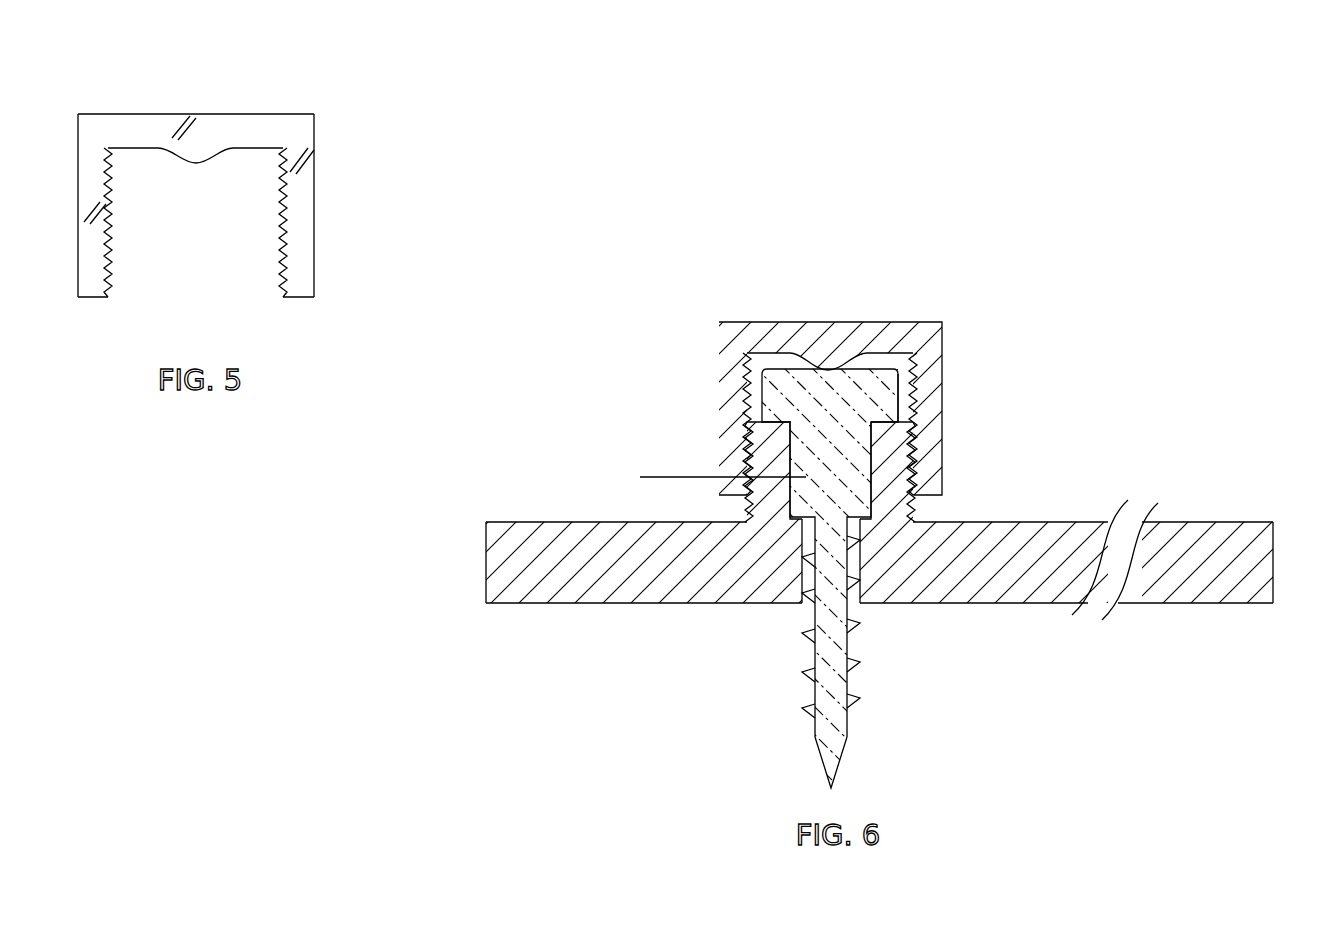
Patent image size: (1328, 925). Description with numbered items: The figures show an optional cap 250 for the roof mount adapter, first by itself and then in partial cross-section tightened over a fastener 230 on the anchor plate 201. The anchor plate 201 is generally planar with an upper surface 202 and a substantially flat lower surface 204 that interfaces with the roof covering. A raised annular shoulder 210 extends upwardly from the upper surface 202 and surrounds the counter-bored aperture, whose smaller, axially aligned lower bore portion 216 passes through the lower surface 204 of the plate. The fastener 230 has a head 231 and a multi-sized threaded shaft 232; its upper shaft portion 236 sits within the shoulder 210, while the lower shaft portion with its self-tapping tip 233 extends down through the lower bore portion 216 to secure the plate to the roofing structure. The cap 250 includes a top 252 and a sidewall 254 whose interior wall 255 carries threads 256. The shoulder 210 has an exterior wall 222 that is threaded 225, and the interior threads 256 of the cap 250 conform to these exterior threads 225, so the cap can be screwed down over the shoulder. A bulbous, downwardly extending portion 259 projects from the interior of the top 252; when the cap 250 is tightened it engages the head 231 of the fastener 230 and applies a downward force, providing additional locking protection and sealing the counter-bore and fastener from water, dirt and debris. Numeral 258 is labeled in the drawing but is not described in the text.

In FIG. 6, the anchor plate 201 is at (486, 562).
In FIG. 6, the upper surface 202 is at (502, 522).
In FIG. 6, the lower surface 204 is at (527, 603).
In FIG. 6, the raised annular shoulder 210 is at (745, 415).
In FIG. 6, the lower bore portion 216 is at (800, 562).
In FIG. 6, the exterior wall 222 is at (757, 450).
In FIG. 6, the exterior threads 225 is at (915, 514).
In FIG. 6, the fastener 230 is at (789, 689).
In FIG. 6, the head 231 is at (900, 392).
In FIG. 6, the threaded shaft 232 is at (847, 670).
In FIG. 6, the self-tapping tip 233 is at (835, 776).
In FIG. 6, the upper shaft portion 236 is at (820, 477).
In FIG. 5, the cap 250 is at (398, 148).
In FIG. 6, the cap 250 is at (872, 322).
In FIG. 5, the top 252 is at (283, 114).
In FIG. 5, the sidewall 254 is at (314, 193).
In FIG. 6, the sidewall 254 is at (719, 392).
In FIG. 5, the interior wall 255 is at (298, 258).
In FIG. 5, the interior threads 256 is at (282, 212).
In FIG. 6, the interior threads 256 is at (915, 425).
In FIG. 5, the cap cavity ceiling 258 is at (118, 147).
In FIG. 5, the bulbous portion 259 is at (199, 162).
In FIG. 6, the bulbous portion 259 is at (828, 368).